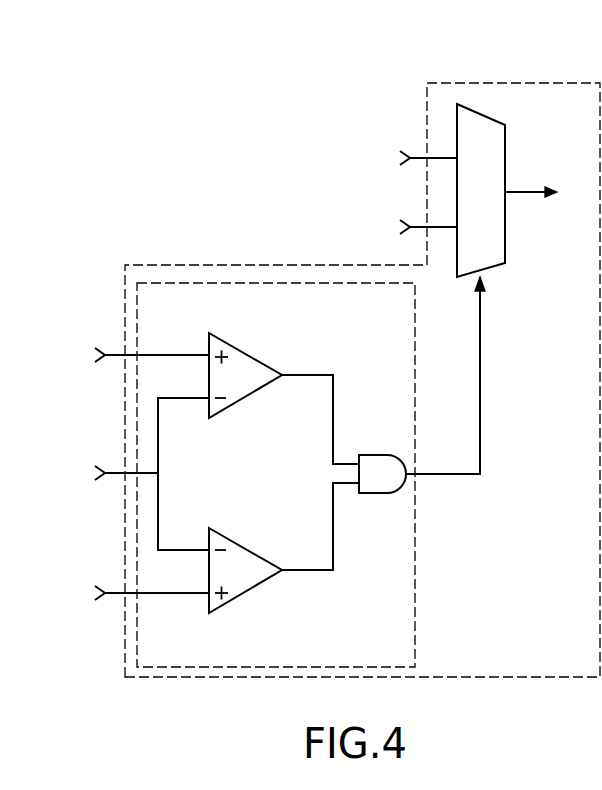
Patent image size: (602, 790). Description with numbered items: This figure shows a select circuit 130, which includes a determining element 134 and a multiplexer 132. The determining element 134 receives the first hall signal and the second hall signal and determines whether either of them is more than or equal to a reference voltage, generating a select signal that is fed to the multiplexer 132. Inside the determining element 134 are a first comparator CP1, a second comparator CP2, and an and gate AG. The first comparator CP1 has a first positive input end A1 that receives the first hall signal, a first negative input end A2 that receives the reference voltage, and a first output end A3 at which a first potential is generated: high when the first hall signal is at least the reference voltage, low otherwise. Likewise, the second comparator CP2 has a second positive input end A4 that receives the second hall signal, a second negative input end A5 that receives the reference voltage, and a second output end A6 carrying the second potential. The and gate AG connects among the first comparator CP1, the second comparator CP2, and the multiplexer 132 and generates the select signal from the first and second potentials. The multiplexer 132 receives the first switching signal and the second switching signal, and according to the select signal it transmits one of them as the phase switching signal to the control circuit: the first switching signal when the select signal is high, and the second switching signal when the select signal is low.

The select circuit 130 is at (513, 83).
The multiplexer 132 is at (506, 140).
The determining element 134 is at (241, 283).
The first comparator CP1 is at (247, 397).
The second comparator CP2 is at (247, 592).
The first positive input end A1 is at (208, 354).
The first negative input end A2 is at (208, 399).
The first output end A3 is at (284, 373).
The second positive input end A4 is at (208, 594).
The second negative input end A5 is at (208, 549).
The second output end A6 is at (284, 568).
The and gate AG is at (378, 455).